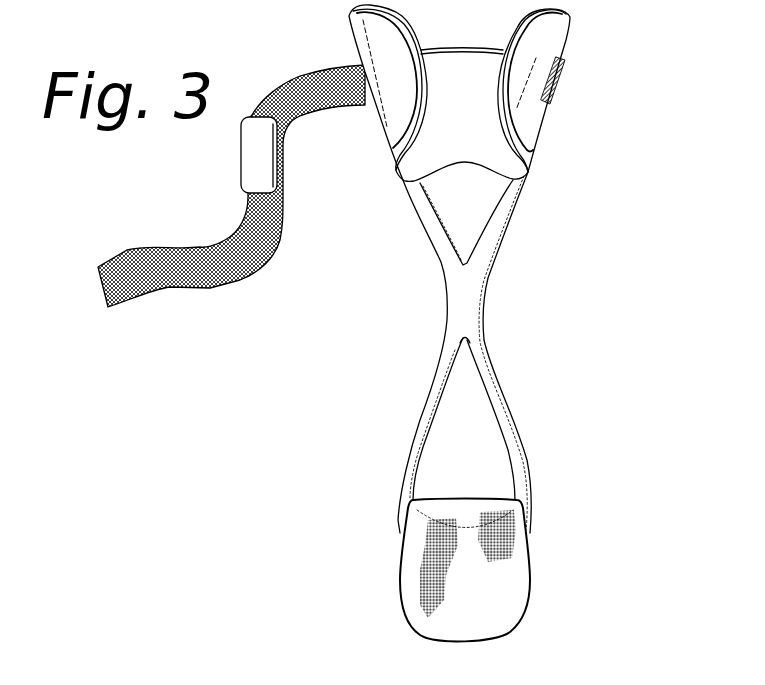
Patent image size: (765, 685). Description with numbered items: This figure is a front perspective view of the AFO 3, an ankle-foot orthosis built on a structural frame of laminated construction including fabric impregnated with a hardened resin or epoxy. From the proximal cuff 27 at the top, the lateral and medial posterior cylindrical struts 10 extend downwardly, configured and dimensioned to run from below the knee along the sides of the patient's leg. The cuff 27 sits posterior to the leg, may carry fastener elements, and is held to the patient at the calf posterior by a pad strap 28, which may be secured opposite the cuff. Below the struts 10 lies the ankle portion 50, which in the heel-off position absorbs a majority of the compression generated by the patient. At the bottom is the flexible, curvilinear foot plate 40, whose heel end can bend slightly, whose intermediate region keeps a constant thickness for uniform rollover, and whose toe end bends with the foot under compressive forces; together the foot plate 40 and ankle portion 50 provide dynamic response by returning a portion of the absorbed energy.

The AFO 3 is at (509, 93).
The posterior cylindrical strut 10 is at (505, 427).
The proximal cuff 27 is at (555, 43).
The pad strap 28 is at (115, 247).
The foot plate 40 is at (532, 612).
The ankle portion 50 is at (484, 307).